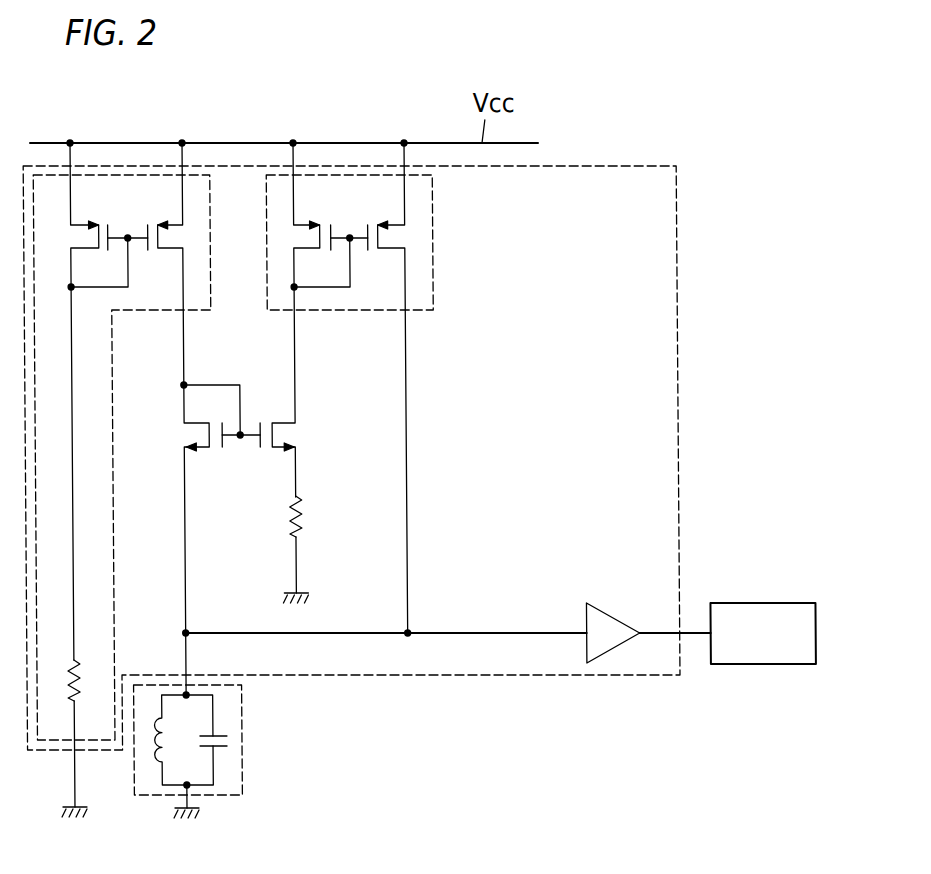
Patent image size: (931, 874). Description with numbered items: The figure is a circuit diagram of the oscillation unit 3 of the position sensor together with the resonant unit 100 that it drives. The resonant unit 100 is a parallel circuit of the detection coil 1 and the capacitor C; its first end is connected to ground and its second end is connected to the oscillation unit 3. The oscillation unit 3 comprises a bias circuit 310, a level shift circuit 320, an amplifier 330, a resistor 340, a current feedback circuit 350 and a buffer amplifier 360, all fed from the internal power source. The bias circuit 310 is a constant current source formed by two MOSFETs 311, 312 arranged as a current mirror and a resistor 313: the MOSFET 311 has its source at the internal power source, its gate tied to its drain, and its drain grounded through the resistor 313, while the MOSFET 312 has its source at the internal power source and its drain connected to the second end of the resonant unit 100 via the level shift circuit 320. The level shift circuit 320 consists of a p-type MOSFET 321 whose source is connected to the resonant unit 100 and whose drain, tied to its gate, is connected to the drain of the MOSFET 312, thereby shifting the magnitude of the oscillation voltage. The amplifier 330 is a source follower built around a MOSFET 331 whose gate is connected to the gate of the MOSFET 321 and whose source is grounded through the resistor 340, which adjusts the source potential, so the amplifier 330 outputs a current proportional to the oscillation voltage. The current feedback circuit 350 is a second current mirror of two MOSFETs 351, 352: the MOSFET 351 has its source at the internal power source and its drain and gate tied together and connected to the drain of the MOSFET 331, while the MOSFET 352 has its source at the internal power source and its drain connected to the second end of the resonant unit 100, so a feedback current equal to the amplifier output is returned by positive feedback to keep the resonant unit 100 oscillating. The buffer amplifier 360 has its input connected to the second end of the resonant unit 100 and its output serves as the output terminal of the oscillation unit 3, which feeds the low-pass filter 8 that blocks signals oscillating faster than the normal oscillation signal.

The oscillation unit 3 is at (676, 207).
The bias circuit 310 is at (110, 368).
The MOSFET 311 is at (75, 237).
The MOSFET 312 is at (170, 244).
The resistor 313 is at (85, 670).
The level shift circuit 320 is at (195, 438).
The p-type MOSFET 321 is at (216, 437).
The amplifier 330 is at (285, 437).
The MOSFET 331 is at (275, 427).
The resistor 340 is at (302, 520).
The current feedback circuit 350 is at (432, 242).
The MOSFET 351 is at (300, 237).
The MOSFET 352 is at (392, 244).
The buffer amplifier 360 is at (601, 623).
The low-pass filter 8 is at (774, 617).
The resonant unit 100 is at (241, 773).
The detection coil 1 is at (151, 757).
The capacitor C is at (225, 741).